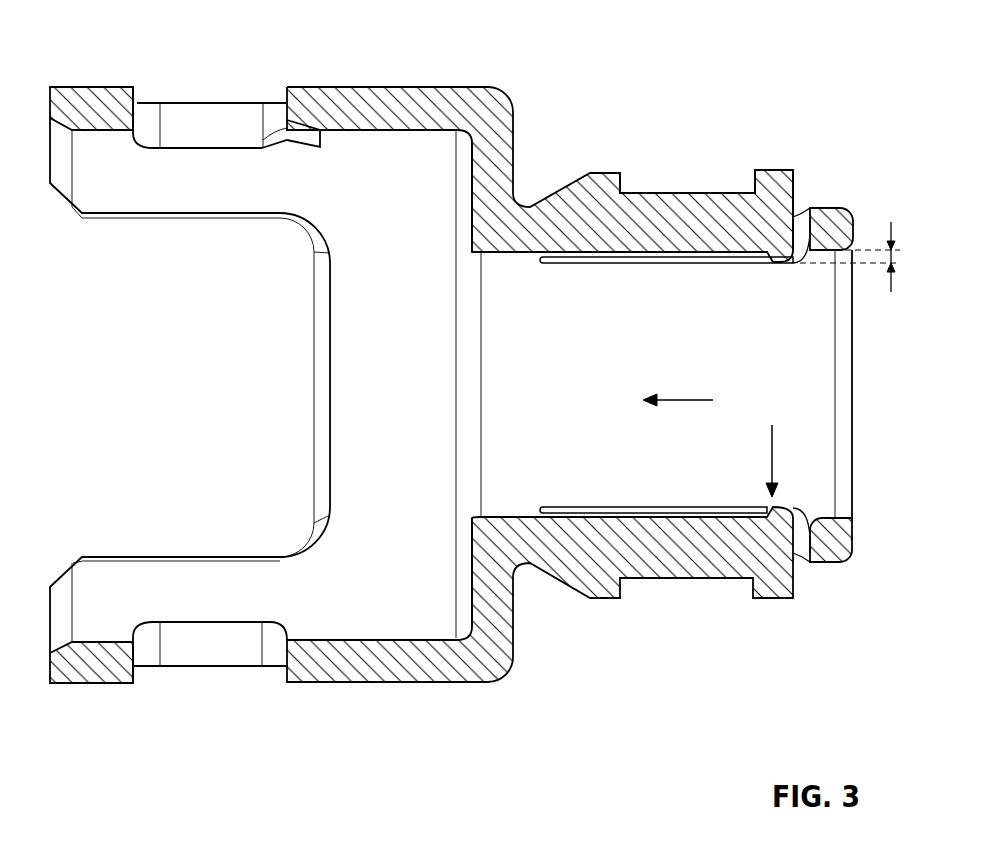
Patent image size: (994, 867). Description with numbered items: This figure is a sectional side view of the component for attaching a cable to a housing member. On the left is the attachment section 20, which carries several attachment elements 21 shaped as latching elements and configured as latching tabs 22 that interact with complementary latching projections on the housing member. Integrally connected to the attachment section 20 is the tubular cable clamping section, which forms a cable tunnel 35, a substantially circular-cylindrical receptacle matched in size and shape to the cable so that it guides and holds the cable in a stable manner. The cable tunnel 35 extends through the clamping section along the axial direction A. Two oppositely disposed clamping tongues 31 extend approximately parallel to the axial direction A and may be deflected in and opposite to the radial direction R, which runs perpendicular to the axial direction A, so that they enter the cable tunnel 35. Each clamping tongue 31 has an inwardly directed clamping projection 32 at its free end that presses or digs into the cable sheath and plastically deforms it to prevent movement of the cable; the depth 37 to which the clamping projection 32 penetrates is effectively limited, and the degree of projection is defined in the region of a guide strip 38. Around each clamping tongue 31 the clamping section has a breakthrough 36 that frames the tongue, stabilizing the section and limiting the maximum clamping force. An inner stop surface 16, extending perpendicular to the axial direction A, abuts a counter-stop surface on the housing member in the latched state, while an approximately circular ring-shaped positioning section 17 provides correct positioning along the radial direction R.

The inner stop surface 16 is at (472, 195).
The positioning section 17 is at (378, 115).
The attachment section 20 is at (143, 577).
The attachment element 21 is at (287, 113).
The latching tab 22 is at (797, 550).
The clamping tongue 31 is at (695, 563).
The clamping projection 32 is at (777, 507).
The cable tunnel 35 is at (773, 385).
The breakthrough 36 is at (813, 227).
The depth 37 is at (897, 253).
The guide strip 38 is at (590, 173).
The axial direction A is at (687, 400).
The radial direction R is at (772, 463).